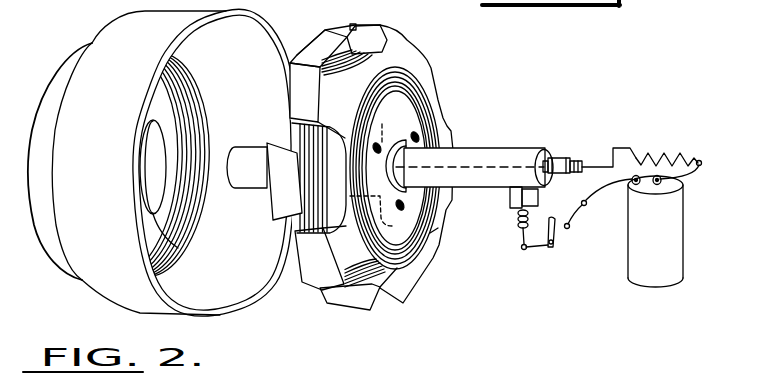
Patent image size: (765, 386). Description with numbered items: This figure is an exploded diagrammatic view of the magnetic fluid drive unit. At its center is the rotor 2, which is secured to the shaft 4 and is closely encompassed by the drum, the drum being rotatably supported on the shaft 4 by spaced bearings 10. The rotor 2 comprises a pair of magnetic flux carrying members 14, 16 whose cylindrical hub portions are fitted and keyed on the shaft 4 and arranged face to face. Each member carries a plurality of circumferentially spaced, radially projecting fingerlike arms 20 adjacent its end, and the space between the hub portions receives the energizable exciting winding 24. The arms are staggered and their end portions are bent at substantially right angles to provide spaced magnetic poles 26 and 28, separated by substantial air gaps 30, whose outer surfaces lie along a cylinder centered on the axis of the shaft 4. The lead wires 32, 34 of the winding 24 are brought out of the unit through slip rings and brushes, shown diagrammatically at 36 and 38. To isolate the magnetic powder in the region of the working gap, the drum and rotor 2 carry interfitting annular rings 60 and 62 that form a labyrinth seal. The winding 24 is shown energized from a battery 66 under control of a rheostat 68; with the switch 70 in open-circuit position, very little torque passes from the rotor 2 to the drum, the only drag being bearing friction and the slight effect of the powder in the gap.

The rotor 2 is at (436, 65).
The shaft 4 is at (492, 155).
The spaced bearings 10 is at (262, 1).
The magnetic flux carrying member 14 is at (441, 104).
The magnetic flux carrying member 16 is at (320, 102).
The fingerlike arms 20 is at (407, 45).
The exciting winding 24 is at (300, 196).
The magnetic poles 26 is at (339, 257).
The magnetic poles 28 is at (316, 44).
The air gaps 30 is at (354, 27).
The lead wire 32 is at (385, 223).
The lead wire 34 is at (382, 124).
The slip rings and brushes 36 is at (531, 196).
The slip rings and brushes 38 is at (567, 155).
The annular ring 60 is at (166, 80).
The annular ring 62 is at (434, 233).
The battery 66 is at (667, 218).
The rheostat 68 is at (651, 155).
The switch 70 is at (556, 236).